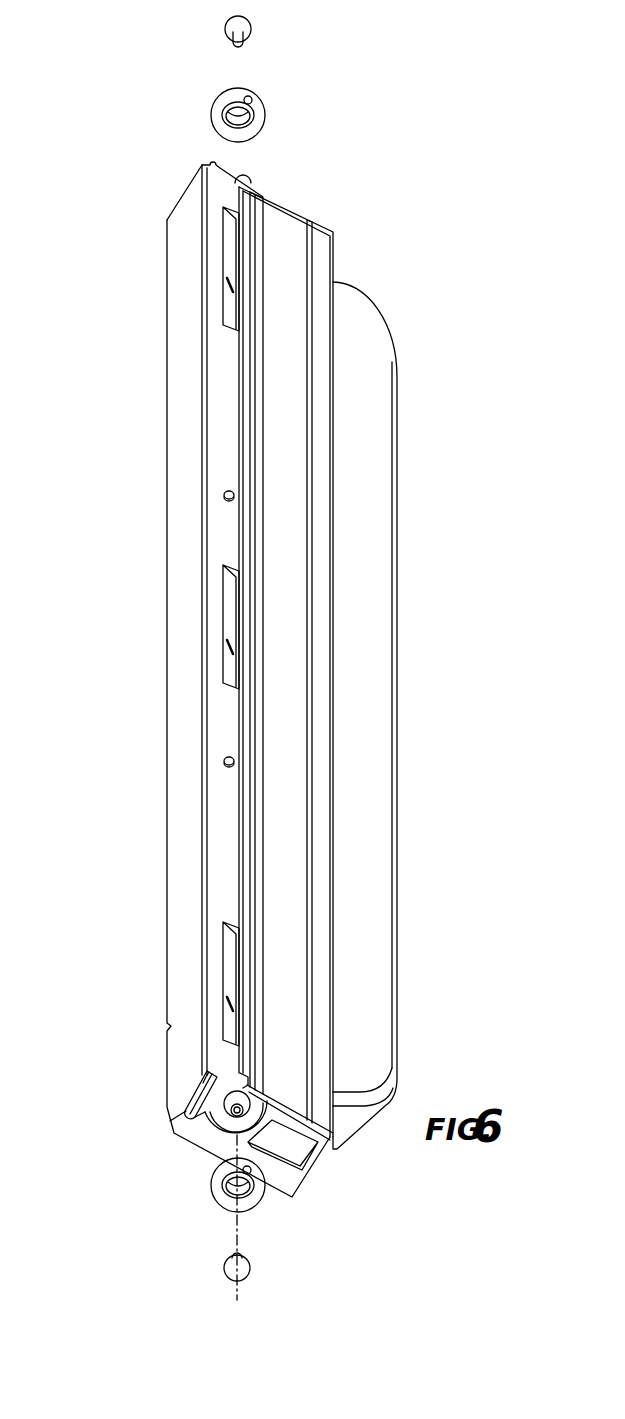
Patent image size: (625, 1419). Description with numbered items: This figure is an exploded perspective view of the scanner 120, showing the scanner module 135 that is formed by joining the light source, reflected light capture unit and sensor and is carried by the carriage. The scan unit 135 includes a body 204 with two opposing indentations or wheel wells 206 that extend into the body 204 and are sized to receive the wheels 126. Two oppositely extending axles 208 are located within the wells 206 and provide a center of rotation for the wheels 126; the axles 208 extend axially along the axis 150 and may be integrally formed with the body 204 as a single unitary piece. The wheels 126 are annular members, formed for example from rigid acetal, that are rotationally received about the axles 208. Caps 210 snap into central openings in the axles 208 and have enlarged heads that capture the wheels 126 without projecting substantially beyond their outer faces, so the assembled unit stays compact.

The scanner 120 is at (96, 186).
The wheels 126 is at (212, 101).
The scanner module 135 is at (174, 1126).
The axis 150 is at (240, 1225).
The body 204 is at (178, 372).
The wheel wells 206 is at (271, 190).
The axles 208 is at (250, 187).
The caps 210 is at (251, 27).